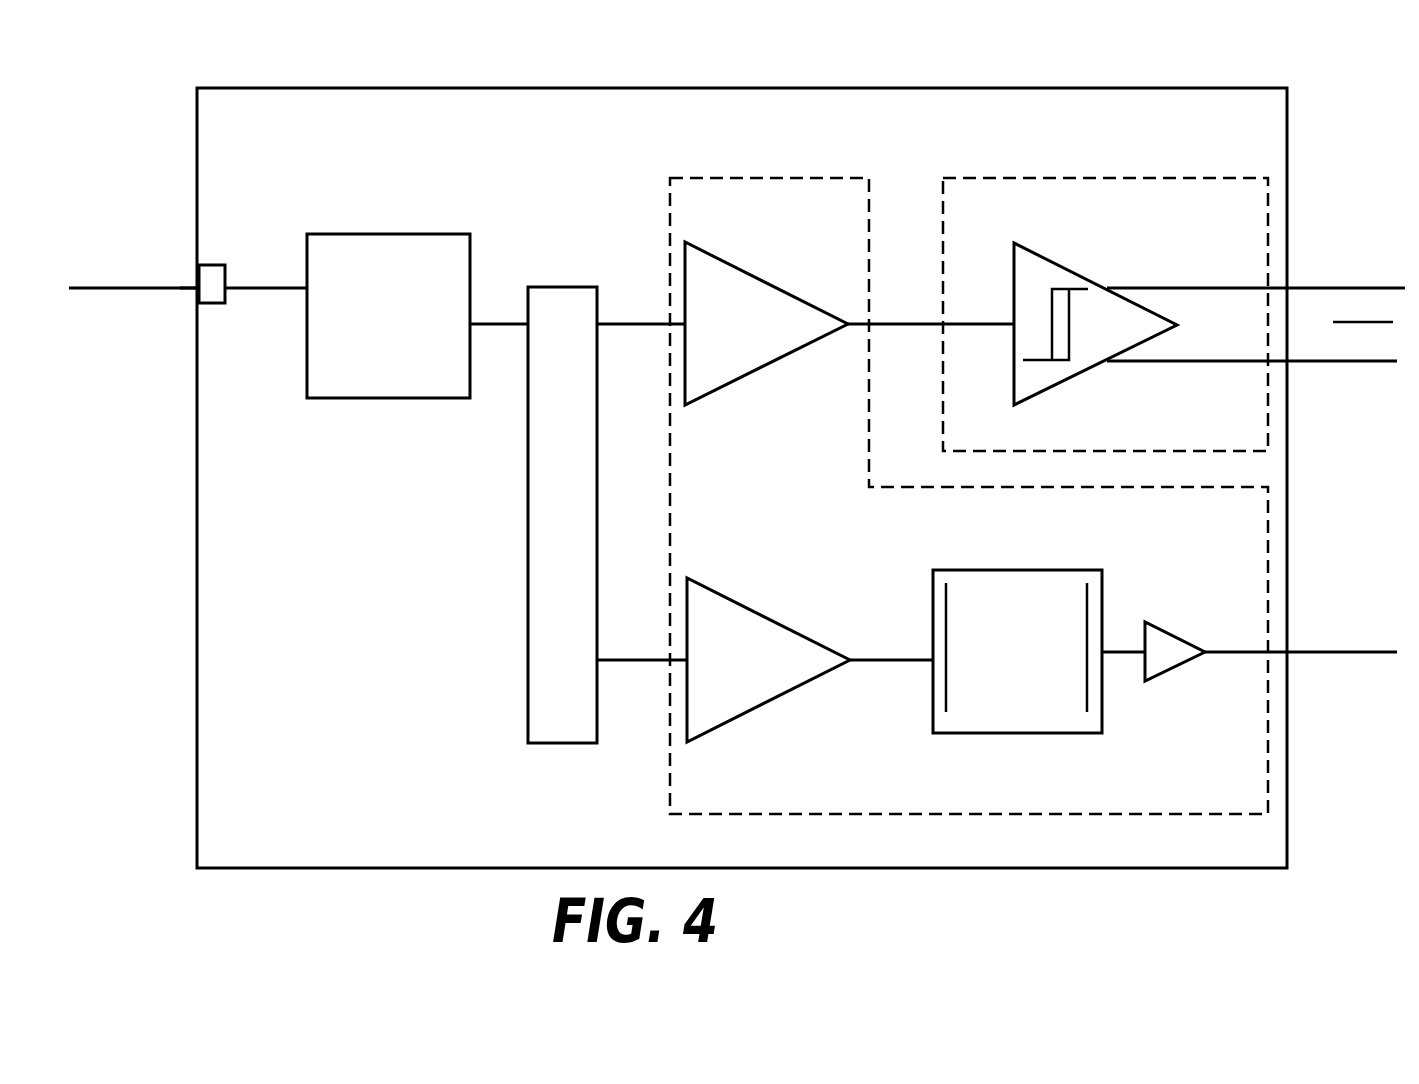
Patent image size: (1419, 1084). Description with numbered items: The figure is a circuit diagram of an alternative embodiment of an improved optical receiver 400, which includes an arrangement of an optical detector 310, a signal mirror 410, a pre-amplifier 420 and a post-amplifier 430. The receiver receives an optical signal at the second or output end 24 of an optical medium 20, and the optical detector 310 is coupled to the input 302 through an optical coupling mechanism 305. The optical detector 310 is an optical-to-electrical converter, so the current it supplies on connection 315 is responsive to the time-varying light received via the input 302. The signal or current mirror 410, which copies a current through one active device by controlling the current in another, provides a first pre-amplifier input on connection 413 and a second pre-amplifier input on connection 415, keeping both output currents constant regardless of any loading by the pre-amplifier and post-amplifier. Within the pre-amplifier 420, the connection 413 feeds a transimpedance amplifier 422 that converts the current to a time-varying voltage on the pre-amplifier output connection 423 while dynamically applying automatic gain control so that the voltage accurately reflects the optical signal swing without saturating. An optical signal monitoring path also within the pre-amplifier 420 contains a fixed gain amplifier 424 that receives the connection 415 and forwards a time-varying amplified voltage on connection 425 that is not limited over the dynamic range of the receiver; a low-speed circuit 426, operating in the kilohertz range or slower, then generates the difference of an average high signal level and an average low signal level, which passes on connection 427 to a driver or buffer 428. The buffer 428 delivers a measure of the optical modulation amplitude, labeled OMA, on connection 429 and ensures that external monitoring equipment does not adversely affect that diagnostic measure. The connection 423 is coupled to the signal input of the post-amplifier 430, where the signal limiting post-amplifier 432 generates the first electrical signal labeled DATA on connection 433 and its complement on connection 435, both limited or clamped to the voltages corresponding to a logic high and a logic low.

The optical medium 20 is at (84, 290).
The second or output end 24 is at (190, 260).
The input 302 is at (212, 303).
The optical coupling mechanism 305 is at (270, 277).
The optical detector 310 is at (461, 390).
The connection 315 is at (497, 312).
The optical receiver 400 is at (1262, 861).
The signal mirror 410 is at (583, 717).
The connection 413 is at (634, 312).
The connection 415 is at (634, 632).
The pre-amplifier 420 is at (1243, 809).
The transimpedance amplifier 422 is at (710, 287).
The pre-amplifier output connection 423 is at (905, 305).
The fixed gain amplifier 424 is at (710, 617).
The connection 425 is at (887, 640).
The low-speed circuit 426 is at (1010, 570).
The connection 427 is at (1133, 628).
The buffer 428 is at (1160, 632).
The connection 429 is at (1323, 652).
The post-amplifier 430 is at (1243, 436).
The signal limiting post-amplifier 432 is at (1058, 280).
The connection 433 is at (1312, 288).
The connection 435 is at (1312, 362).